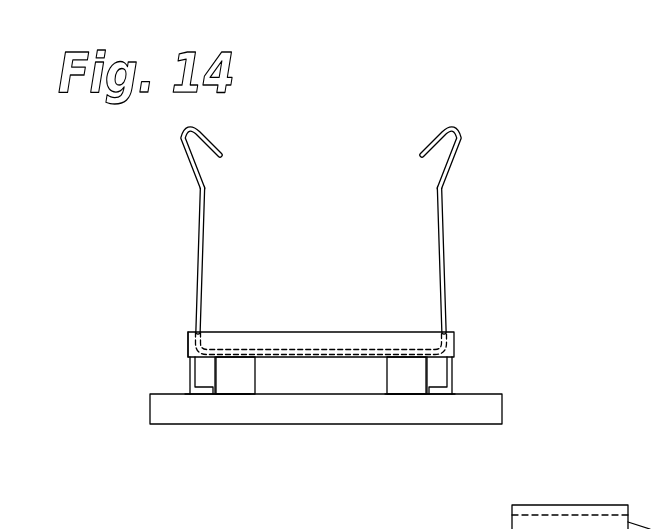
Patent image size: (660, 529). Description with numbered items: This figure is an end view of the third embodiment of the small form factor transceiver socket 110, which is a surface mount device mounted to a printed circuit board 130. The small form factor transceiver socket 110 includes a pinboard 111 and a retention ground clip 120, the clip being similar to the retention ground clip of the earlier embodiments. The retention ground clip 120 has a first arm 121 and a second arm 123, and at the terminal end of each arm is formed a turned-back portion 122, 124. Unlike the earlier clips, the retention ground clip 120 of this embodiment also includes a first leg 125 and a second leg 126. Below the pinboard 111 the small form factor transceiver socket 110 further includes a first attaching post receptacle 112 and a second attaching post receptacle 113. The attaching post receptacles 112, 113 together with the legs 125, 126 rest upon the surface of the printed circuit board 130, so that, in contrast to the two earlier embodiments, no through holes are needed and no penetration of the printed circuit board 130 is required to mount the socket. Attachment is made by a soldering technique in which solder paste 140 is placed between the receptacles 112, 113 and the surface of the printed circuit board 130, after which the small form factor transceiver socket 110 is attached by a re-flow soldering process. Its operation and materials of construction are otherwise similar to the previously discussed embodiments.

The small form factor transceiver socket 110 is at (368, 300).
The pinboard 111 is at (188, 343).
The first attaching post receptacle 112 is at (257, 380).
The second attaching post receptacle 113 is at (388, 380).
The retention ground clip 120 is at (337, 225).
The first arm 121 is at (443, 195).
The turned-back portion 122 is at (427, 138).
The second arm 123 is at (197, 225).
The turned-back portion 124 is at (183, 133).
The first leg 125 is at (188, 377).
The second leg 126 is at (455, 380).
The printed circuit board 130 is at (503, 410).
The solder paste 140 is at (245, 395).